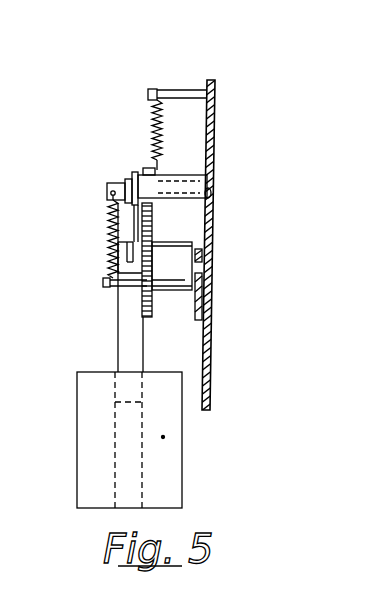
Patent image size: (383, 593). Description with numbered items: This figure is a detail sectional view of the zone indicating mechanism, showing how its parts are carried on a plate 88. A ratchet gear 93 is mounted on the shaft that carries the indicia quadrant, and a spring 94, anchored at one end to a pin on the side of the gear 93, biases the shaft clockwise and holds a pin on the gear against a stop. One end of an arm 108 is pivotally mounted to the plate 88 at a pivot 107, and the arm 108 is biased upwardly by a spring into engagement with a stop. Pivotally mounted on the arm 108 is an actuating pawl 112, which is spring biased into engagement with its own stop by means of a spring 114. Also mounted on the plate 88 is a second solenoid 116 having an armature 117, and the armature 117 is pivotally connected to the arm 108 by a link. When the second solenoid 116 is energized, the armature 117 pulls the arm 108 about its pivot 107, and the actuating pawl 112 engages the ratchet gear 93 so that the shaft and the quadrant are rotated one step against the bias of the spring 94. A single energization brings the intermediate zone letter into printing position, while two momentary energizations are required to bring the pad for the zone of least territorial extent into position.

The plate 88 is at (210, 398).
The ratchet gear 93 is at (152, 312).
The spring 94 is at (107, 223).
The pivot 107 is at (134, 172).
The arm 108 is at (150, 213).
The actuating pawl 112 is at (150, 207).
The spring 114 is at (162, 113).
The second solenoid 116 is at (82, 469).
The armature 117 is at (125, 340).